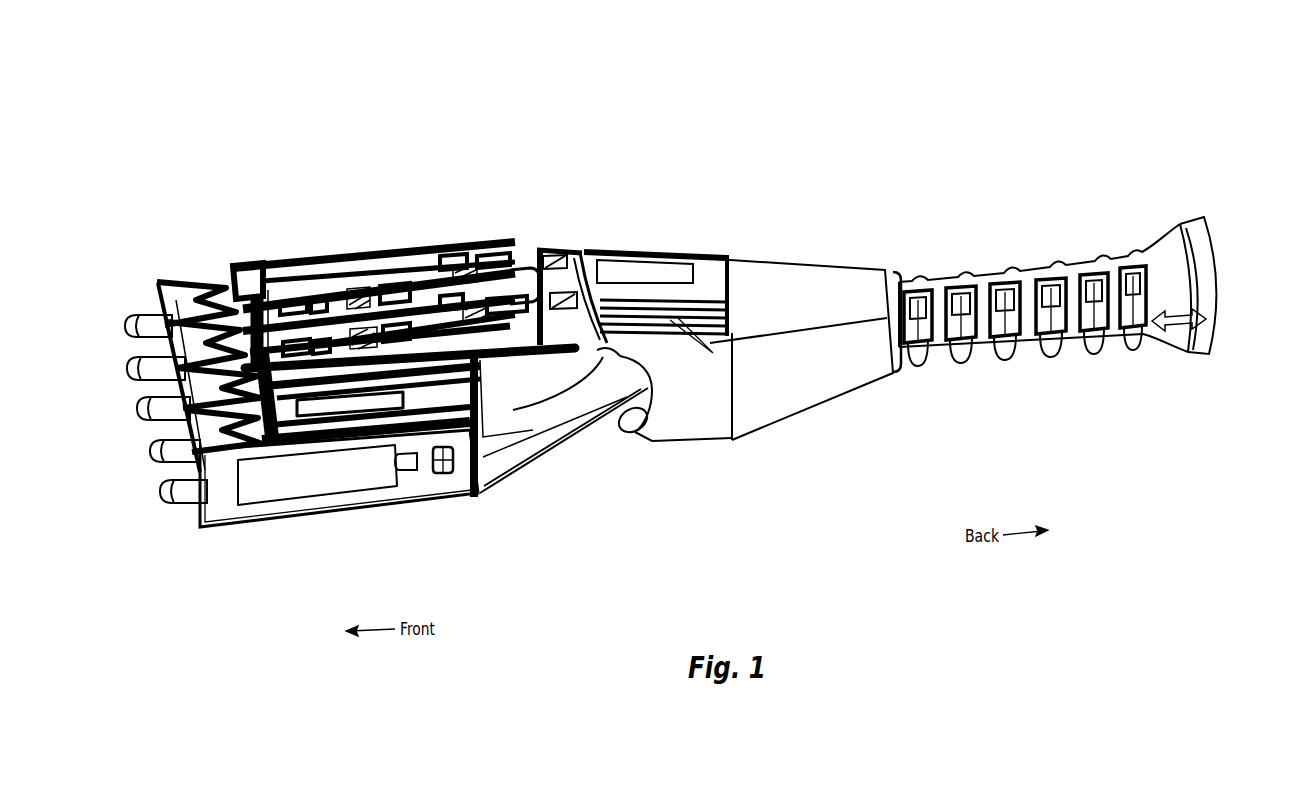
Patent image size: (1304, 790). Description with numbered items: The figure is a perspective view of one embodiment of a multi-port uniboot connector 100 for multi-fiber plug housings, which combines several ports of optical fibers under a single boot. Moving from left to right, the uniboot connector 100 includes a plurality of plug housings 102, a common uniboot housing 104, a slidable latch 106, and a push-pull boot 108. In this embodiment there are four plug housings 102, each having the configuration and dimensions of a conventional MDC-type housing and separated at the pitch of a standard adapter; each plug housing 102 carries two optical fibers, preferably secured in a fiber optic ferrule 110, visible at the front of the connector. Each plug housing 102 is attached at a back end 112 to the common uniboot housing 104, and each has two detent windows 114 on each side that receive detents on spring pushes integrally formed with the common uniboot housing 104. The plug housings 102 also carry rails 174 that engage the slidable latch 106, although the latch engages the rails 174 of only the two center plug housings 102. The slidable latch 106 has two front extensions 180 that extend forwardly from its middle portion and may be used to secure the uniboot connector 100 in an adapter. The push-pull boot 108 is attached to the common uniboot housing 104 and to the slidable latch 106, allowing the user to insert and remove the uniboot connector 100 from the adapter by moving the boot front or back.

The multi-port uniboot connector 100 is at (510, 151).
The plug housings 102 is at (318, 526).
The common uniboot housing 104 is at (570, 471).
The slidable latch 106 is at (560, 249).
The push-pull boot 108 is at (1077, 240).
The fiber optic ferrule 110 is at (160, 493).
The back end 112 is at (490, 498).
The detent window 114 is at (441, 476).
The rails 174 is at (247, 264).
The front extensions 180 is at (310, 268).